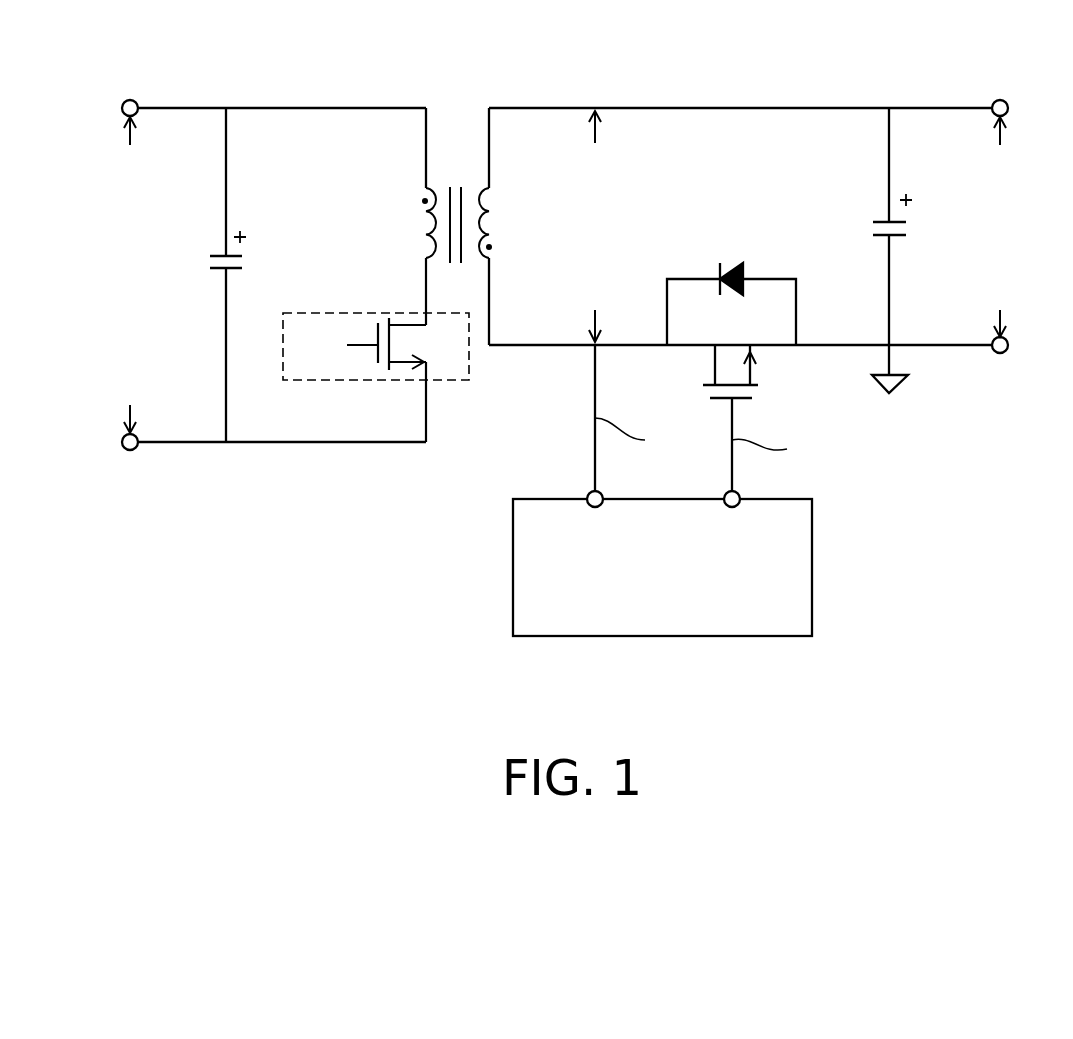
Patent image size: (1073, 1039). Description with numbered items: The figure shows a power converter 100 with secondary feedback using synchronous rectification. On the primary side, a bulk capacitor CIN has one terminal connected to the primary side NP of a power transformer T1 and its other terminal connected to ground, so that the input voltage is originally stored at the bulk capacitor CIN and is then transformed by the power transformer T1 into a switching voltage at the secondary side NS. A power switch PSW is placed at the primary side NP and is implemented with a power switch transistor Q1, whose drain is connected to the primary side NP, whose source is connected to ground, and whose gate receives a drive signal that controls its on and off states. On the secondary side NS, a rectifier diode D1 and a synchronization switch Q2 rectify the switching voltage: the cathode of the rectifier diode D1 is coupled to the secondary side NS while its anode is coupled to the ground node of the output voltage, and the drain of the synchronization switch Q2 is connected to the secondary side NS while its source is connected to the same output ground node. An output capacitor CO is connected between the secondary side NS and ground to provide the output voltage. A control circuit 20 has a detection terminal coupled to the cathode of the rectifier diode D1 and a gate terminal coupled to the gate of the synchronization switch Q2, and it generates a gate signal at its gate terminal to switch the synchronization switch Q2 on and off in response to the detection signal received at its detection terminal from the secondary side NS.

The power converter 100 is at (1071, 692).
The control circuit 20 is at (812, 565).
The power transformer T1 is at (461, 185).
The primary side NP is at (407, 183).
The secondary side NS is at (511, 226).
The power switch transistor Q1 is at (407, 350).
The power switch PSW is at (374, 383).
The rectifier diode D1 is at (731, 286).
The synchronization switch Q2 is at (730, 398).
The bulk capacitor CIN is at (249, 275).
The output capacitor CO is at (909, 250).